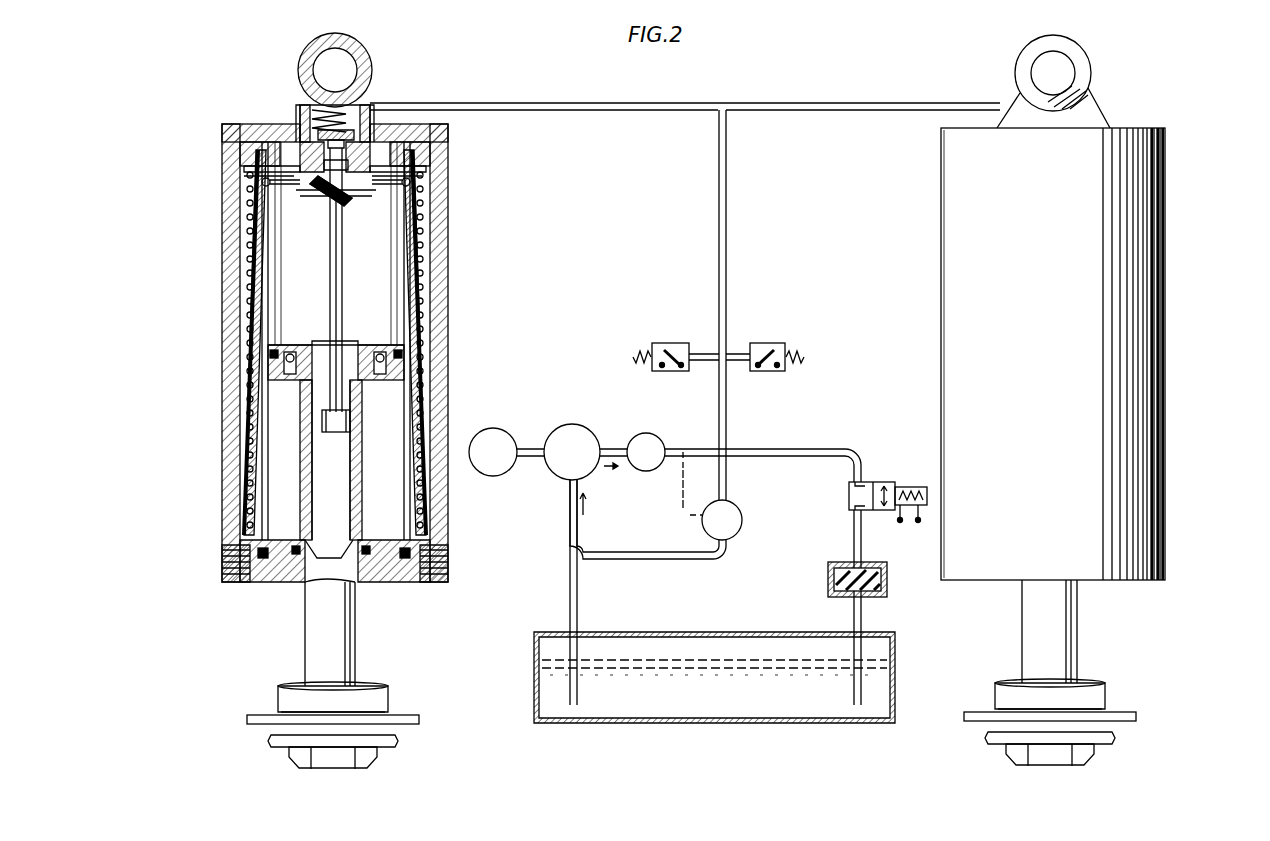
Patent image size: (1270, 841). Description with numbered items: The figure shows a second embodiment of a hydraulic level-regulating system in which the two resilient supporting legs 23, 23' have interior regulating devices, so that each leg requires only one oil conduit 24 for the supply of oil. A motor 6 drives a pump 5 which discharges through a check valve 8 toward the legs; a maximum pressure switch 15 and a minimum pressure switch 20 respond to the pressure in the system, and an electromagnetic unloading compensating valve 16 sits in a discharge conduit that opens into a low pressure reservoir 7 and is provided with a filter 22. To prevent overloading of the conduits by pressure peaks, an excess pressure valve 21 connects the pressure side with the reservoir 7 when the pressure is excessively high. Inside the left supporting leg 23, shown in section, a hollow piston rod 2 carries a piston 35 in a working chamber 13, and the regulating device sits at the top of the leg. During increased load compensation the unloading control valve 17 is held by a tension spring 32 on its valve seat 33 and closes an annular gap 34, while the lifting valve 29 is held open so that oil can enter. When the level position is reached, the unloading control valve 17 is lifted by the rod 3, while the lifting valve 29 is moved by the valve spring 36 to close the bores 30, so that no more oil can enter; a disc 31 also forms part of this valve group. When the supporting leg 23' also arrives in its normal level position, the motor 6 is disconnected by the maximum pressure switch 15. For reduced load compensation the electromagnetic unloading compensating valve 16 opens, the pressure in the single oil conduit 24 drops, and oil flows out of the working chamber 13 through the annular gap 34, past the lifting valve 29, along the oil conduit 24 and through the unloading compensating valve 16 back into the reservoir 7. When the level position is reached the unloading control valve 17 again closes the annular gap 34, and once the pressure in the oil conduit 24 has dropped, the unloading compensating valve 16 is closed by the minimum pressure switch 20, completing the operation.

The hollow piston rod 2 is at (336, 360).
The rod 3 is at (342, 290).
The pump 5 is at (572, 424).
The motor 6 is at (496, 430).
The low pressure reservoir 7 is at (892, 670).
The check valve 8 is at (648, 432).
The working chamber 13 is at (422, 262).
The maximum pressure switch 15 is at (668, 334).
The electromagnetic unloading compensating valve 16 is at (864, 482).
The unloading control valve 17 is at (344, 198).
The minimum pressure switch 20 is at (778, 342).
The excess pressure valve 21 is at (742, 520).
The filter 22 is at (826, 582).
The resilient supporting leg 23 is at (376, 401).
The resilient supporting leg 23' is at (1092, 400).
The oil conduit 24 is at (608, 104).
The lifting valve 29 is at (350, 136).
The bores 30 is at (310, 160).
The valve disc 31 is at (282, 178).
The tension spring 32 is at (410, 174).
The valve seat 33 is at (372, 142).
The annular gap 34 is at (318, 194).
The piston 35 is at (350, 424).
The valve spring 36 is at (342, 116).